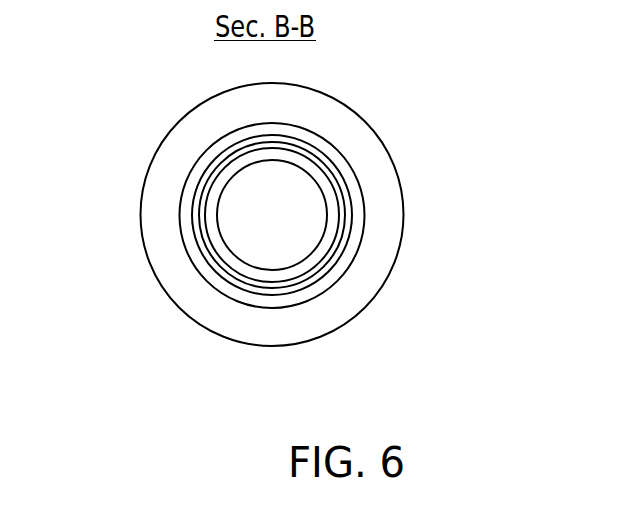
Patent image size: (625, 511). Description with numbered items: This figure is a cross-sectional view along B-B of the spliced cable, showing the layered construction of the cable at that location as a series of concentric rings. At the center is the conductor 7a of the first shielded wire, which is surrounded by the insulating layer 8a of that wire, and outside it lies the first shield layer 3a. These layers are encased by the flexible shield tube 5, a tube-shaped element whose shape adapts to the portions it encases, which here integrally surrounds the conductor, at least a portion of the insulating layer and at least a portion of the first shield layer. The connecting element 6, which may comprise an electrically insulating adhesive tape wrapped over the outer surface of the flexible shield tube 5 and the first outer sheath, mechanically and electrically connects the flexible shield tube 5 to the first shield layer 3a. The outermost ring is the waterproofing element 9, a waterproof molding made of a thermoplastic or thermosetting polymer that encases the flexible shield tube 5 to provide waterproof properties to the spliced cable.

The first shield layer 3a is at (337, 172).
The flexible shield tube 5 is at (347, 217).
The connecting element 6 is at (345, 262).
The conductor 7a is at (245, 198).
The insulating layer 8a is at (187, 203).
The waterproofing element 9 is at (187, 280).